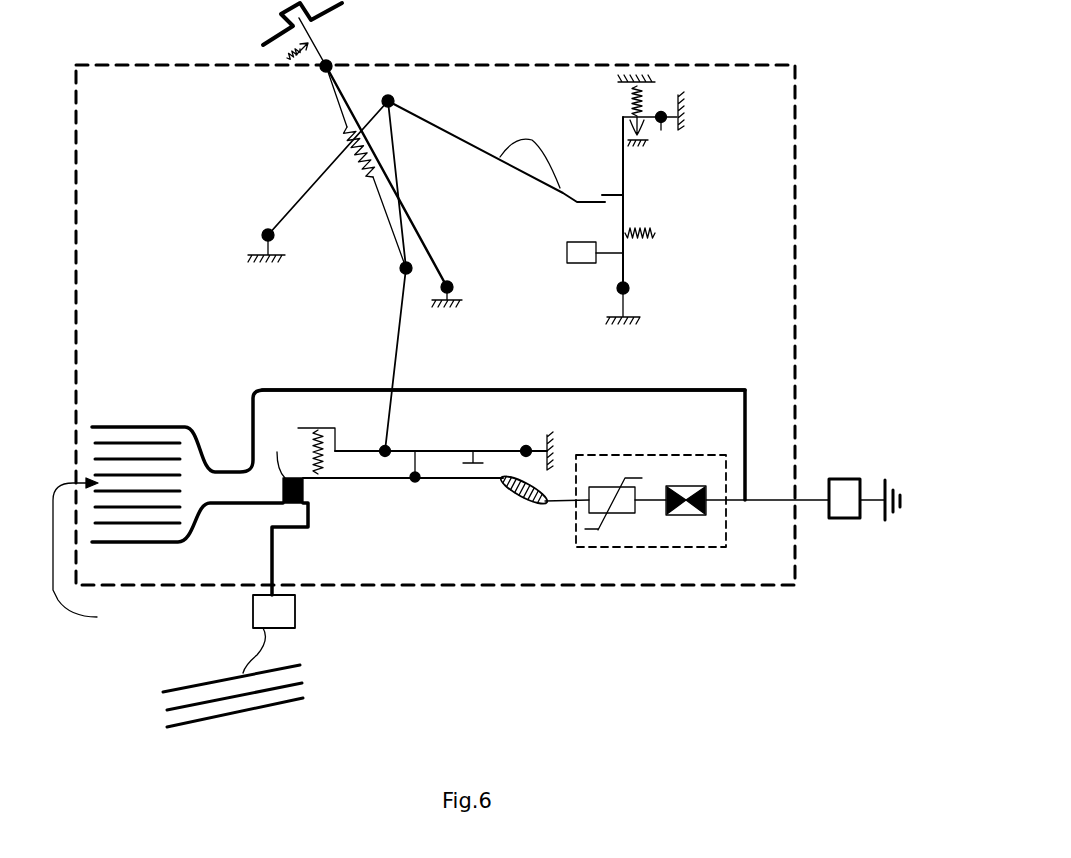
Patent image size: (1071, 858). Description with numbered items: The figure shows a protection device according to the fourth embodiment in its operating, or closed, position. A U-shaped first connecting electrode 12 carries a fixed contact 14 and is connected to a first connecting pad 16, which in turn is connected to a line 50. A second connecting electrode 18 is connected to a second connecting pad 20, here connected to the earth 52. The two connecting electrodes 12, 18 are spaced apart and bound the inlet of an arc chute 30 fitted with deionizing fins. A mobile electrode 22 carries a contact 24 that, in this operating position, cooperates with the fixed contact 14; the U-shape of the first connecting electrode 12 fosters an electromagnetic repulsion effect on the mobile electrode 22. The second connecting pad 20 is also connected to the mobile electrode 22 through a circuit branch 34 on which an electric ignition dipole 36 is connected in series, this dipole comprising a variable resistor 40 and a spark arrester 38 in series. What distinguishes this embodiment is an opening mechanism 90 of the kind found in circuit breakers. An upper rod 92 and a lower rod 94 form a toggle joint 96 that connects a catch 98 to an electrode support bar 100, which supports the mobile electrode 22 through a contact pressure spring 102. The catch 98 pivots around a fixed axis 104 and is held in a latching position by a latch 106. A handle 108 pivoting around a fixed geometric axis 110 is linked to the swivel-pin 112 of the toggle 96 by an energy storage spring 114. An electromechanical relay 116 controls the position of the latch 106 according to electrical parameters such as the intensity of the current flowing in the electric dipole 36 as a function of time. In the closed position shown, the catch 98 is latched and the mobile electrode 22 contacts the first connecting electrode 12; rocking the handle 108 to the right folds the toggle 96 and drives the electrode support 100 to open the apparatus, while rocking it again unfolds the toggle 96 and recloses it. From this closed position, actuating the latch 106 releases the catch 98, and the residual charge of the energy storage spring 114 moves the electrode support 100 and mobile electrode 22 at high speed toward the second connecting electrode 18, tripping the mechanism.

The first connecting electrode 12 is at (290, 530).
The fixed contact 14 is at (304, 500).
The first connecting pad 16 is at (277, 615).
The second connecting electrode 18 is at (122, 422).
The second connecting pad 20 is at (845, 490).
The mobile electrode 22 is at (418, 481).
The contact 24 is at (283, 486).
The arc chute 30 is at (93, 555).
The circuit branch 34 is at (563, 503).
The electric ignition dipole 36 is at (688, 550).
The spark arrester 38 is at (693, 515).
The variable resistor 40 is at (598, 540).
The line 50 is at (268, 707).
The earth 52 is at (896, 488).
The opening mechanism 90 is at (446, 53).
The upper rod 92 is at (395, 138).
The lower rod 94 is at (396, 380).
The toggle joint 96 is at (368, 318).
The catch 98 is at (462, 135).
The electrode support bar 100 is at (425, 450).
The contact pressure spring 102 is at (326, 468).
The fixed axis 104 is at (262, 232).
The latch 106 is at (626, 197).
The handle 108 is at (282, 28).
The fixed geometric axis 110 is at (453, 287).
The swivel-pin 112 is at (400, 270).
The energy storage spring 114 is at (346, 131).
The electromechanical relay 116 is at (585, 263).